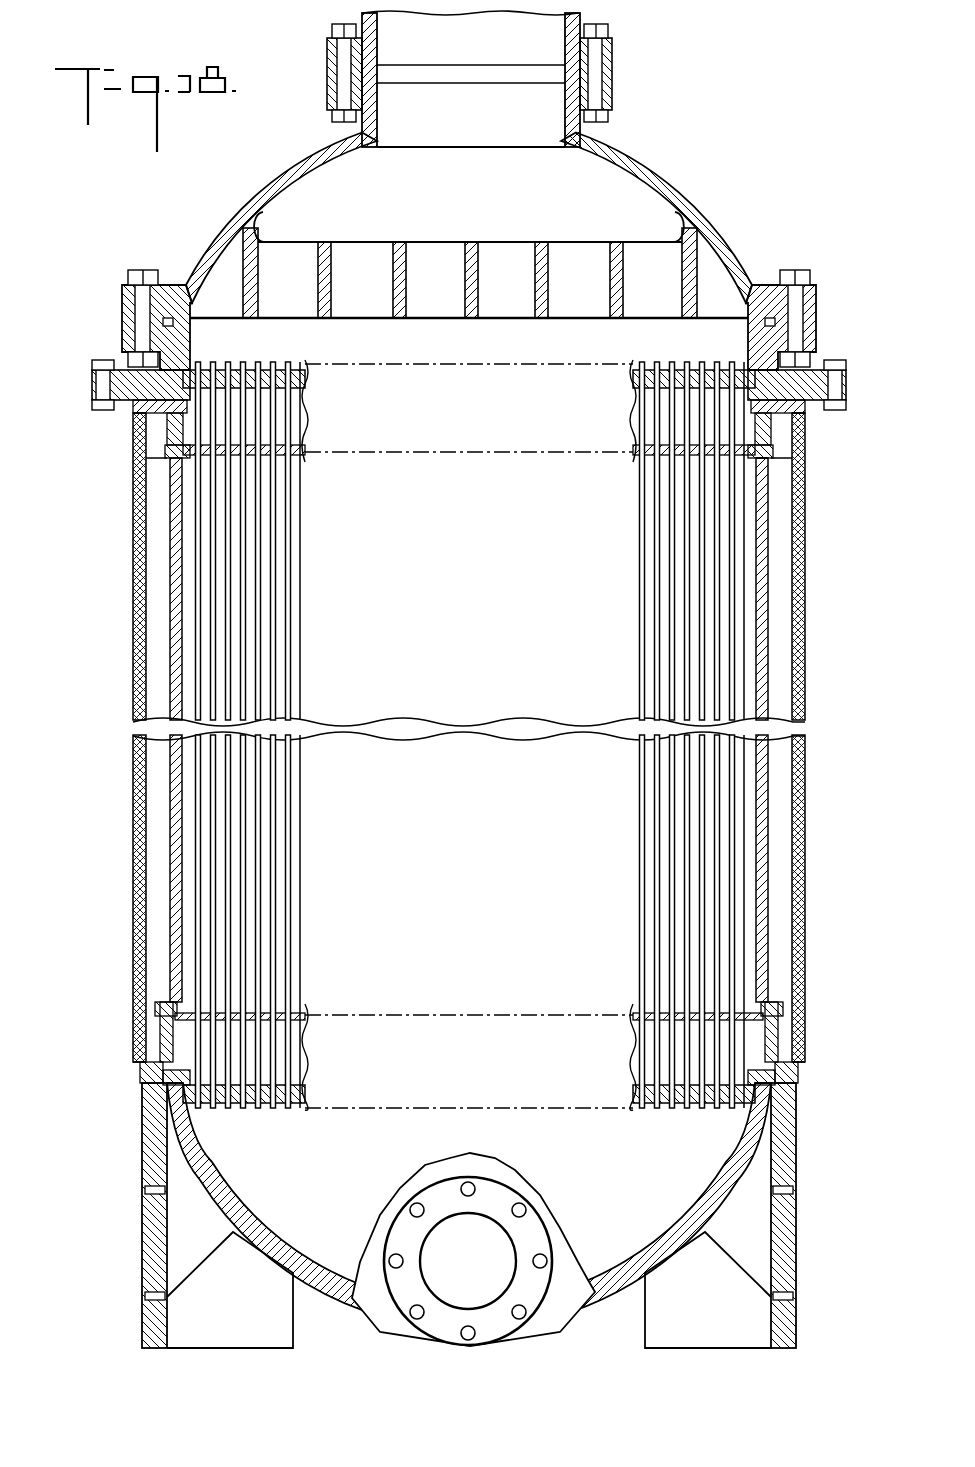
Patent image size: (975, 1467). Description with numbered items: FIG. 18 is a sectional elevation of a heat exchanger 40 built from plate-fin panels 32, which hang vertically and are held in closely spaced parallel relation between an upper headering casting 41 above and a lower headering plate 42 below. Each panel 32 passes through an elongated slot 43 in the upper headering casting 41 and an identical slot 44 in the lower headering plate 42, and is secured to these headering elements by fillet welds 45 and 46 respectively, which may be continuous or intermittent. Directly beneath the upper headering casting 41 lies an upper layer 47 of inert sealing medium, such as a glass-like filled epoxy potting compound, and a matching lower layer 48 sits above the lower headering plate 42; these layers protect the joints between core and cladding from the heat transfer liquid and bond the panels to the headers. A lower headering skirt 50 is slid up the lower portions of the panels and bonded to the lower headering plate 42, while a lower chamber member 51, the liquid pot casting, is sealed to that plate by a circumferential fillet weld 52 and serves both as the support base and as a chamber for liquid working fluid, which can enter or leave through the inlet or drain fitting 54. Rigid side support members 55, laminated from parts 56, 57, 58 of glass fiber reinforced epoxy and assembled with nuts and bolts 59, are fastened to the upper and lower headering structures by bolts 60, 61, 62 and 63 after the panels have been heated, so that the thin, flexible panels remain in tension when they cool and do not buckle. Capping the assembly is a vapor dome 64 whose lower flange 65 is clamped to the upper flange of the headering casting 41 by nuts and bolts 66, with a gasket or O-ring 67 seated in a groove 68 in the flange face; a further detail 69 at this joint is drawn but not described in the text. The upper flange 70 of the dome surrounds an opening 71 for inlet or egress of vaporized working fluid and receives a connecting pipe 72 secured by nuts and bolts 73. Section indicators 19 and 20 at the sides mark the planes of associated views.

The section line 19 is at (853, 303).
The section line 20 is at (897, 350).
The plate-fin panels 32 is at (646, 588).
The heat exchanger 40 is at (227, 209).
The upper headering casting 41 is at (122, 370).
The lower headering plate 42 is at (142, 1098).
The elongated slot 43 is at (290, 362).
The slot 44 is at (292, 1110).
The fillet welds 45 is at (262, 366).
The fillet welds 46 is at (252, 1110).
The upper layer of inert sealing medium 47 is at (167, 440).
The lower layer of inert sealing medium 48 is at (800, 415).
The lower headering skirt 50 is at (772, 1022).
The lower chamber member 51 is at (792, 1148).
The circumferential fillet weld 52 is at (772, 1085).
The inlet or drain fitting 54 is at (510, 1322).
The rigid side support members 55 is at (812, 582).
The laminated part of side member 56 is at (175, 505).
The laminated part of side member 57 is at (153, 532).
The laminated part of side member 58 is at (133, 482).
The nuts and bolts 59 is at (805, 1070).
The bolt 60 is at (805, 452).
The bolt 61 is at (792, 465).
The bolt 62 is at (785, 1296).
The bolt 63 is at (846, 385).
The vapor dome 64 is at (668, 178).
The flange 65 is at (124, 282).
The nuts and bolts 66 is at (820, 342).
The gasket or O-ring 67 is at (795, 272).
The groove 68 is at (760, 325).
The left seal gap 69 is at (182, 318).
The upper flange 70 is at (612, 100).
The opening 71 is at (492, 125).
The connecting pipe 72 is at (578, 18).
The nuts and bolts 73 is at (505, 242).